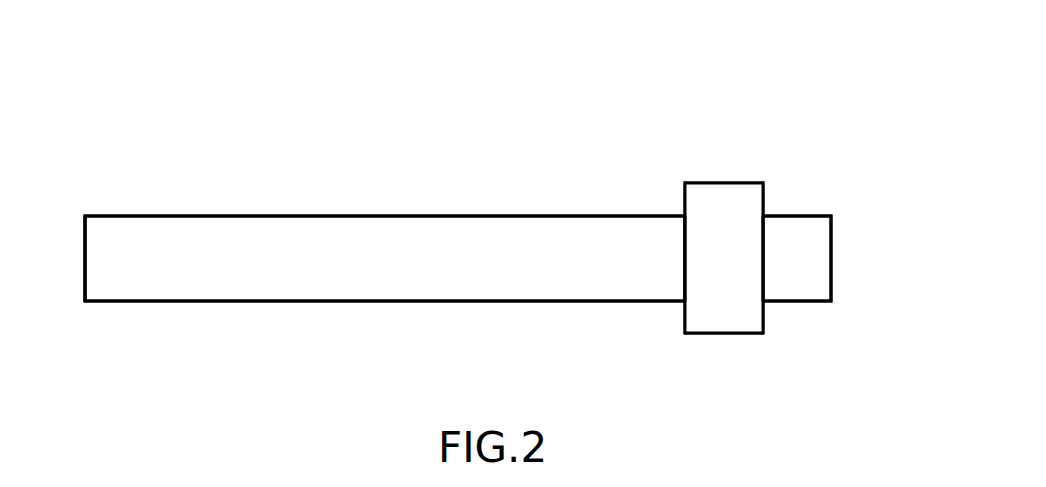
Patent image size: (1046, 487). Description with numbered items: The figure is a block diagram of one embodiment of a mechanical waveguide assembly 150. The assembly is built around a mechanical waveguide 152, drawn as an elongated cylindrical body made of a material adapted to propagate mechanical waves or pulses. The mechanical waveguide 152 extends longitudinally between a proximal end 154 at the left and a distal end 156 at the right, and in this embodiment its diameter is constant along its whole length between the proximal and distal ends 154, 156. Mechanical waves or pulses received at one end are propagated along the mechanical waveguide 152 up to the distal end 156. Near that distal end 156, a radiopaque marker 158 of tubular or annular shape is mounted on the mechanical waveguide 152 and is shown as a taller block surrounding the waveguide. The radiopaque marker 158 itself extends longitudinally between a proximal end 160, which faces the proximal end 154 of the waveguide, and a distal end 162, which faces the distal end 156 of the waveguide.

The mechanical waveguide assembly 150 is at (145, 58).
The mechanical waveguide 152 is at (268, 232).
The proximal end 154 is at (79, 277).
The distal end 156 is at (836, 280).
The radiopaque marker 158 is at (716, 200).
The proximal end of radiopaque marker 160 is at (681, 245).
The distal end of radiopaque marker 162 is at (767, 240).